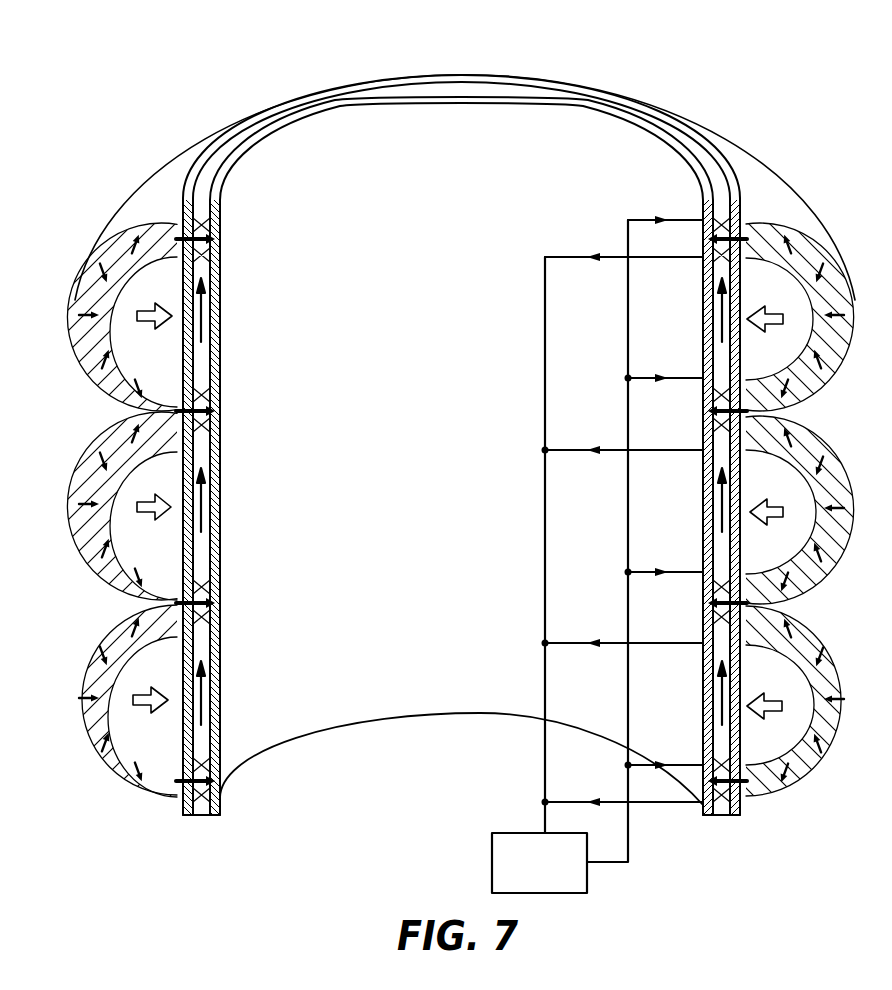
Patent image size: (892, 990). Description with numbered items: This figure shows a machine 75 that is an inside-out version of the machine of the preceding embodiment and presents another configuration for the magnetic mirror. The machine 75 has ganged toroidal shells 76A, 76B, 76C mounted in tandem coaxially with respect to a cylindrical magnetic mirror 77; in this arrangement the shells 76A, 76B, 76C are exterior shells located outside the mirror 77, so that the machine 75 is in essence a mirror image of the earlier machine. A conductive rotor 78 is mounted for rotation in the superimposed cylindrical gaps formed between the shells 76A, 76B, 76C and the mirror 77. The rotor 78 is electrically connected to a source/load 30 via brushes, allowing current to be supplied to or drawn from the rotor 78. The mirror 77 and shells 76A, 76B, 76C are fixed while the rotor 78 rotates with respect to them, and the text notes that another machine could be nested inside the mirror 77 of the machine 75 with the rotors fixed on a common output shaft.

The machine 75 is at (130, 98).
The toroidal shell 76A is at (95, 247).
The toroidal shell 76B is at (95, 437).
The toroidal shell 76C is at (95, 627).
The cylindrical magnetic mirror 77 is at (367, 143).
The conductive rotor 78 is at (255, 133).
The source/load 30 is at (512, 833).